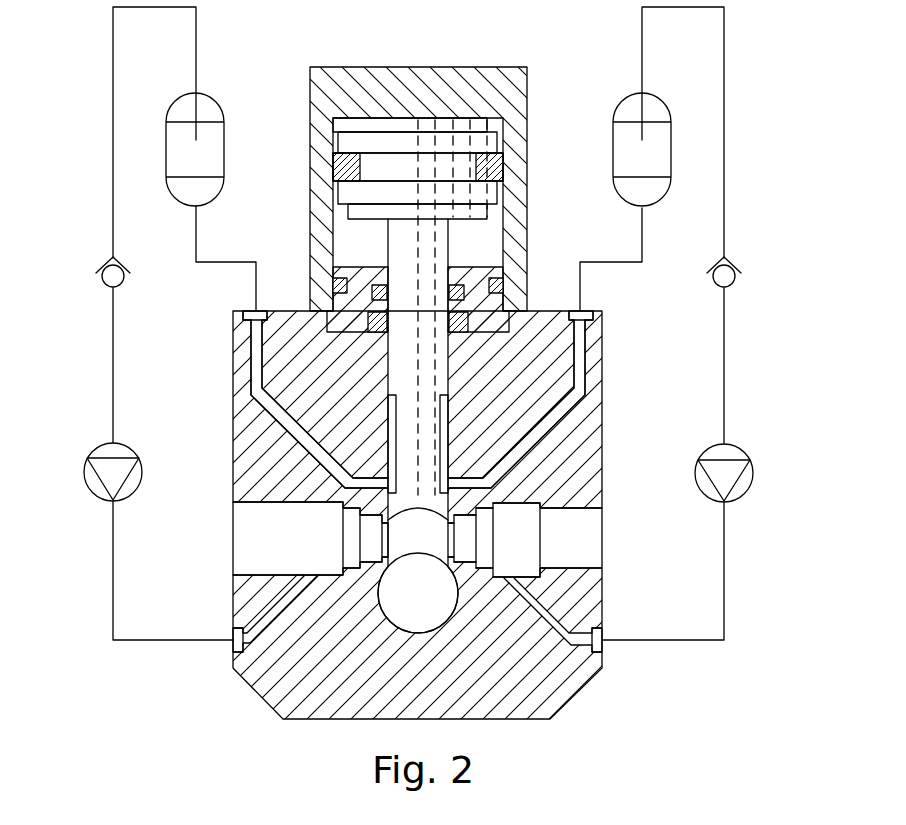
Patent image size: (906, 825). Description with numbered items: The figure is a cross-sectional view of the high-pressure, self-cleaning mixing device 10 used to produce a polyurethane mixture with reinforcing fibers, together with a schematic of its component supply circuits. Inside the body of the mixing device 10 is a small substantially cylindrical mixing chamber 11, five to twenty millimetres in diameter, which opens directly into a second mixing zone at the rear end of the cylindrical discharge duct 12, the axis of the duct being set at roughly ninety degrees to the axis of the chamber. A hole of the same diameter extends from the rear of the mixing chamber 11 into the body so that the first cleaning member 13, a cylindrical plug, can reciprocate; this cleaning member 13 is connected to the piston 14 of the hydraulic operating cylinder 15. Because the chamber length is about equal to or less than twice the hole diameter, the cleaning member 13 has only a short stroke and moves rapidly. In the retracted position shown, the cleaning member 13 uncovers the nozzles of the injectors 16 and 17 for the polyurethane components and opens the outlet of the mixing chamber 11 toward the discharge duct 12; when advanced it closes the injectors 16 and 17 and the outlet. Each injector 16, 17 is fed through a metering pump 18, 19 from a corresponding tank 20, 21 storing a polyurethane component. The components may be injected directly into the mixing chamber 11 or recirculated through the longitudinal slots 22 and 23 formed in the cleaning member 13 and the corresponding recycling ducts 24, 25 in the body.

The mixing device 10 is at (572, 687).
The mixing chamber 11 is at (425, 535).
The discharge duct 12 is at (390, 618).
The first cleaning member 13 is at (425, 348).
The piston 14 is at (487, 145).
The hydraulic operating cylinder 15 is at (500, 72).
The injector 16 is at (250, 523).
The injector 17 is at (595, 560).
The metering pump 18 is at (110, 465).
The metering pump 19 is at (730, 480).
The tank 20 is at (200, 163).
The tank 21 is at (630, 165).
The longitudinal slot 22 is at (387, 458).
The longitudinal slot 23 is at (445, 453).
The recycling duct 24 is at (256, 352).
The recycling duct 25 is at (590, 370).